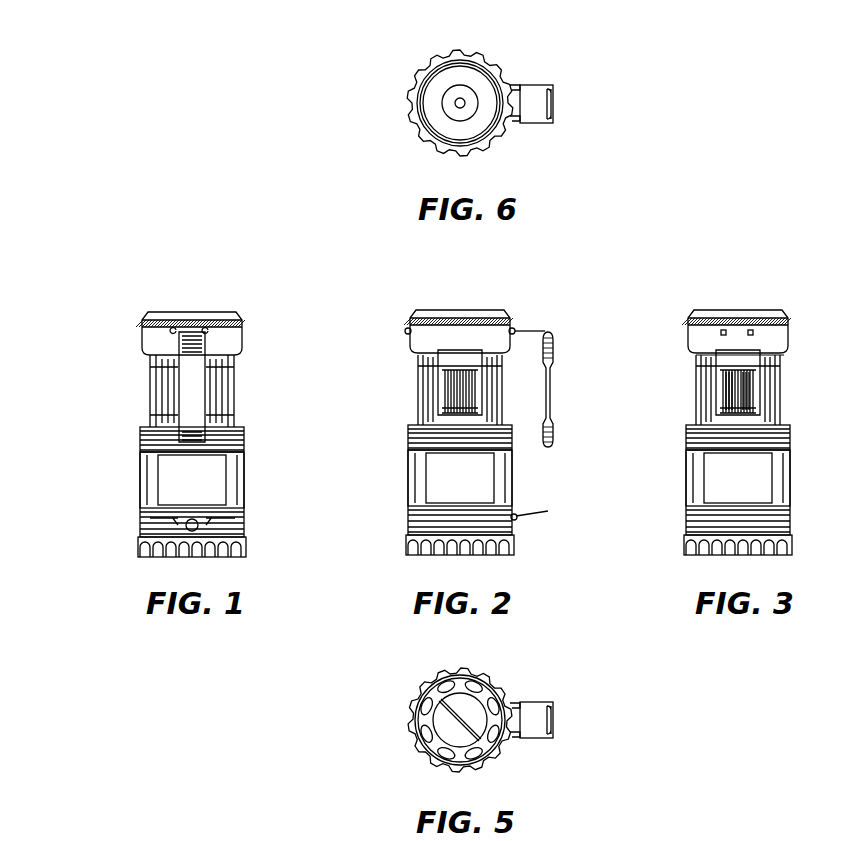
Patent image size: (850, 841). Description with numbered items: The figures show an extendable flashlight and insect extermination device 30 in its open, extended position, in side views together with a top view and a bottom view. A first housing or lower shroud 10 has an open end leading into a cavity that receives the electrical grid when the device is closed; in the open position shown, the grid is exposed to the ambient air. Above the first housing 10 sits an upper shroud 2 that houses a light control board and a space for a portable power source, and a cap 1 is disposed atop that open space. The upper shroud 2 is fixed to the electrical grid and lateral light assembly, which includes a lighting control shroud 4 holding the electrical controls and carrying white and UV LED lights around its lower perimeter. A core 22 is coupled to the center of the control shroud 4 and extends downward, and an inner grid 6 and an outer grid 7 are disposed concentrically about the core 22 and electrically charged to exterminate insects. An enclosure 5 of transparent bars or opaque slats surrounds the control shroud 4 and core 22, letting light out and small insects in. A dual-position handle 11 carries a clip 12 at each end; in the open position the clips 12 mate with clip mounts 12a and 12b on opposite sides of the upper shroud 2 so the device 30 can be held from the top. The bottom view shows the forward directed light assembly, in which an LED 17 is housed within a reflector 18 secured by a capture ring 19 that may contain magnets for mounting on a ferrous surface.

In FIG. 1, the cap 1 is at (187, 318).
In FIG. 5, the cap 1 is at (432, 765).
In FIG. 1, the upper shroud 2 is at (150, 340).
In FIG. 3, the lighting control shroud 4 is at (734, 357).
In FIG. 2, the enclosure 5 is at (418, 388).
In FIG. 3, the inner grid 6 is at (772, 358).
In FIG. 3, the outer grid 7 is at (765, 392).
In FIG. 1, the first housing 10 is at (140, 478).
In FIG. 6, the dual-position handle 11 is at (556, 103).
In FIG. 2, the dual-position handle 11 is at (554, 393).
In FIG. 5, the dual-position handle 11 is at (556, 726).
In FIG. 6, the clip 12 is at (527, 85).
In FIG. 2, the clip 12 is at (530, 330).
In FIG. 5, the clip 12 is at (546, 702).
In FIG. 6, the clip mount 12a is at (518, 127).
In FIG. 2, the clip mount 12a is at (514, 328).
In FIG. 5, the clip mount 12a is at (518, 705).
In FIG. 6, the clip mount 12b is at (405, 124).
In FIG. 2, the clip mount 12b is at (406, 331).
In FIG. 5, the clip mount 12b is at (406, 736).
In FIG. 6, the LED 17 is at (460, 98).
In FIG. 6, the reflector 18 is at (443, 90).
In FIG. 6, the capture ring 19 is at (442, 150).
In FIG. 1, the core 22 is at (150, 424).
In FIG. 1, the insect extermination/lighting device 30 is at (108, 246).